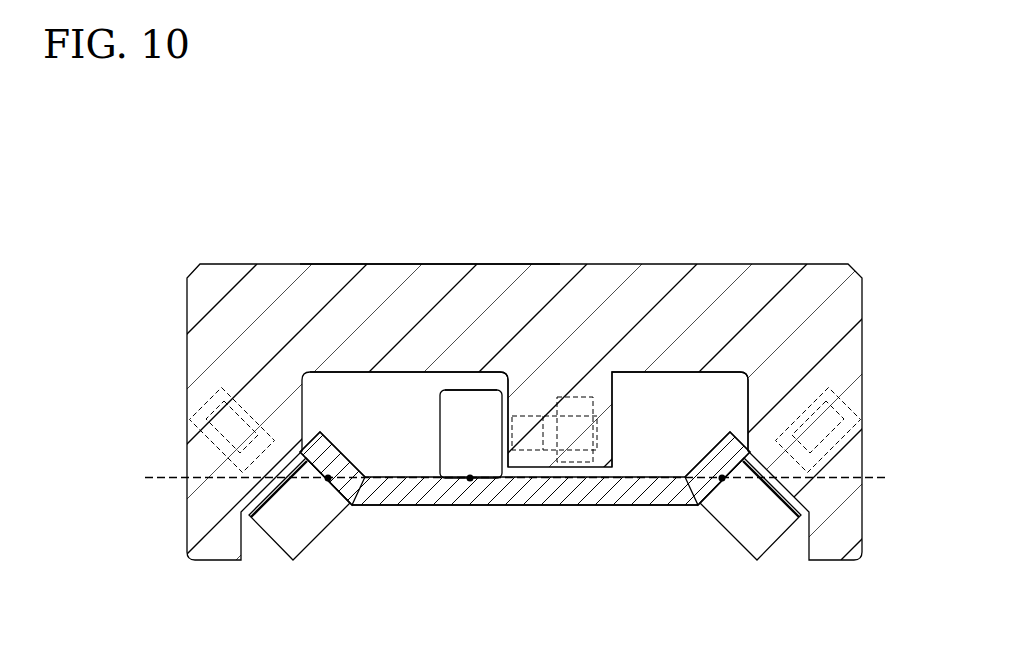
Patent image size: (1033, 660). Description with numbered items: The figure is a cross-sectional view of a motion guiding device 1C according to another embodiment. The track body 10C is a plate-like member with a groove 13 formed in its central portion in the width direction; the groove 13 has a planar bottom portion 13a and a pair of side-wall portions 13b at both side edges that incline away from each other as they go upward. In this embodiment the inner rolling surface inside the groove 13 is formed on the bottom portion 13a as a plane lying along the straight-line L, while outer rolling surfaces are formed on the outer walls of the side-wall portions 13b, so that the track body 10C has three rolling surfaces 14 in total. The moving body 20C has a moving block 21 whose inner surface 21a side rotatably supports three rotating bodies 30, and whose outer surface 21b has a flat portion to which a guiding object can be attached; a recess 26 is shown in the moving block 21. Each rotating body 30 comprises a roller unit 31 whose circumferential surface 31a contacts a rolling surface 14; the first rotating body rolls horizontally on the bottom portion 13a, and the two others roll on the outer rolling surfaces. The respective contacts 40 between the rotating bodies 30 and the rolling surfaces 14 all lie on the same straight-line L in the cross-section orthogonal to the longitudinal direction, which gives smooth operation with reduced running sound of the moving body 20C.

The motion guiding device 1C is at (195, 197).
The track body 10C is at (503, 506).
The groove 13 is at (525, 467).
The bottom portion 13a is at (588, 506).
The side-wall portion 13b is at (337, 463).
The rolling surface 14 is at (455, 475).
The moving body 20C is at (272, 260).
The moving block 21 is at (187, 300).
The inner surface 21a is at (513, 372).
The outer surface 21b is at (417, 262).
The recess 26 is at (613, 372).
The rotating body 30 is at (459, 376).
The roller unit 31 is at (447, 392).
The circumferential surface 31a is at (470, 482).
The contact 40 is at (285, 457).
The straight-line L is at (163, 477).